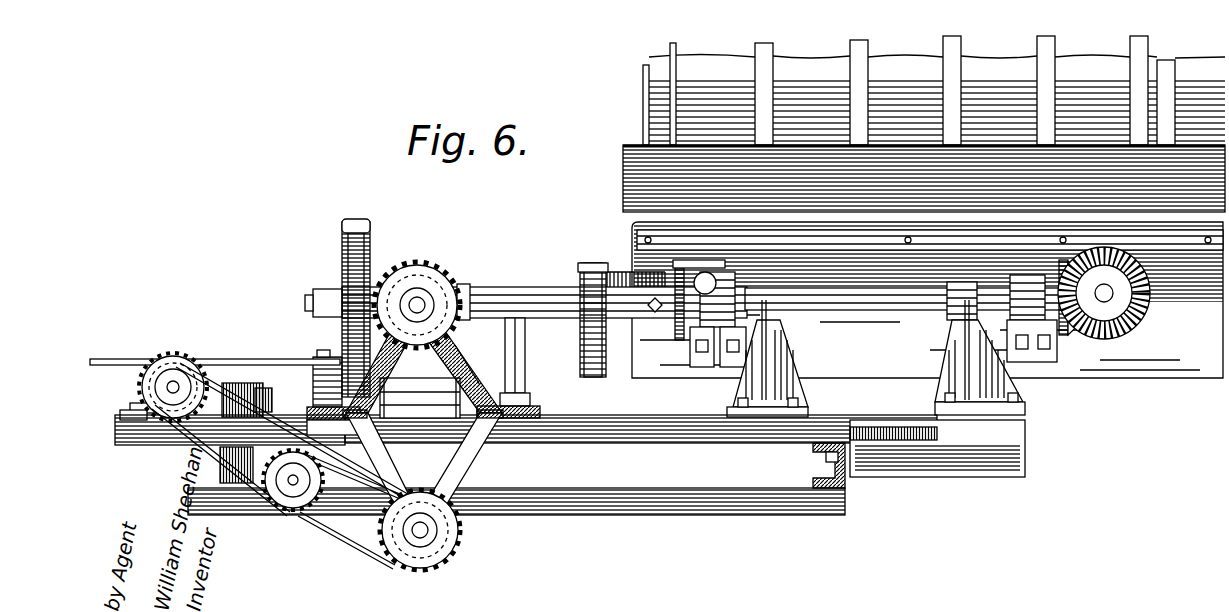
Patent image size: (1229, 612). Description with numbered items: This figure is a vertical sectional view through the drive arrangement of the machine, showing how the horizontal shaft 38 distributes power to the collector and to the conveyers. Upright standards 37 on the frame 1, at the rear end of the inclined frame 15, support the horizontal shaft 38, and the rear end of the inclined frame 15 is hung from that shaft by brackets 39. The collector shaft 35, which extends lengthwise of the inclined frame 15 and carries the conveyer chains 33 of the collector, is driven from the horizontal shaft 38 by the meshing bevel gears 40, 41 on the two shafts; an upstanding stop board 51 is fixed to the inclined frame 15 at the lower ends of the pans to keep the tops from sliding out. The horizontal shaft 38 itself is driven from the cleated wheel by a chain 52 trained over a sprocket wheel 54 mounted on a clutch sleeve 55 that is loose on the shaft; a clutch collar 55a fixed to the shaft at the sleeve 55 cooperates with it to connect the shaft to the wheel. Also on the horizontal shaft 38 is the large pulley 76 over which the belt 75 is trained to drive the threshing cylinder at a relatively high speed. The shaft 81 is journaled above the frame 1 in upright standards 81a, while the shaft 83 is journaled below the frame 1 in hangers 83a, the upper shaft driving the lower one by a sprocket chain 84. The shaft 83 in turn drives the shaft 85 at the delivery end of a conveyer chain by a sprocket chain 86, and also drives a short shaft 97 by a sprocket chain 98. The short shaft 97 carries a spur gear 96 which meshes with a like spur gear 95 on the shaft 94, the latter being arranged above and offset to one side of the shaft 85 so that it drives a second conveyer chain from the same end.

The frame 1 is at (1034, 456).
The inclined frame 15 is at (1145, 378).
The conveyer chains 33 is at (703, 309).
The shaft 35 is at (1108, 297).
The upright standards 37 is at (527, 380).
The horizontal shaft 38 is at (880, 328).
The brackets 39 is at (703, 362).
The bevel gear 40 is at (1150, 296).
The bevel gear 41 is at (1058, 268).
The stop board 51 is at (623, 168).
The chain 52 is at (600, 374).
The sprocket wheel 54 is at (592, 265).
The clutch sleeve 55 is at (572, 284).
The clutch collar 55a is at (652, 308).
The belt 75 is at (356, 220).
The large pulley 76 is at (371, 250).
The shaft 81 is at (422, 300).
The upright standards 81a is at (462, 372).
The shaft 83 is at (462, 542).
The hangers 83a is at (470, 465).
The sprocket chain 84 is at (384, 405).
The shaft 85 is at (296, 485).
The sprocket chain 86 is at (346, 540).
The shaft 94 is at (272, 385).
The spur gear 95 is at (272, 406).
The spur gear 96 is at (205, 365).
The short shaft 97 is at (178, 380).
The sprocket chain 98 is at (222, 455).